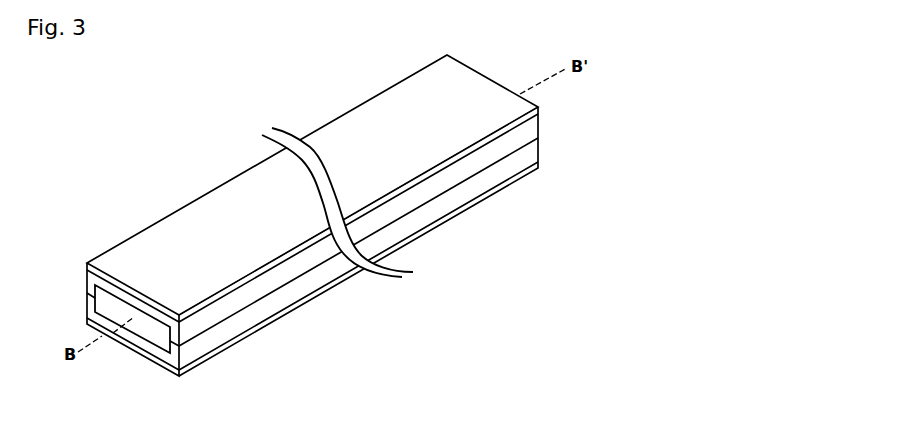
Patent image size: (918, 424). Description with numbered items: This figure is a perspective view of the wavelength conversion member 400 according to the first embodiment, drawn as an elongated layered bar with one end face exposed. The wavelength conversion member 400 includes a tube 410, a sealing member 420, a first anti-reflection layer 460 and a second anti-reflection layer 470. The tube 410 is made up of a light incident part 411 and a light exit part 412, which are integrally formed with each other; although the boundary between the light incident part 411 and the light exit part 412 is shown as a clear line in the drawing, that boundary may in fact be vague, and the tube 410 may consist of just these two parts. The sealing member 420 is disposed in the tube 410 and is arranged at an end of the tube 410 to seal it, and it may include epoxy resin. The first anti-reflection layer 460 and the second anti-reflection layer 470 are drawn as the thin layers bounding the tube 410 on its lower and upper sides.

The wavelength conversion member 400 is at (95, 118).
The tube 410 is at (312, 275).
The light incident part 411 is at (280, 303).
The light exit part 412 is at (242, 302).
The sealing member 420 is at (147, 333).
The first anti-reflection layer 460 is at (87, 323).
The second anti-reflection layer 470 is at (87, 266).